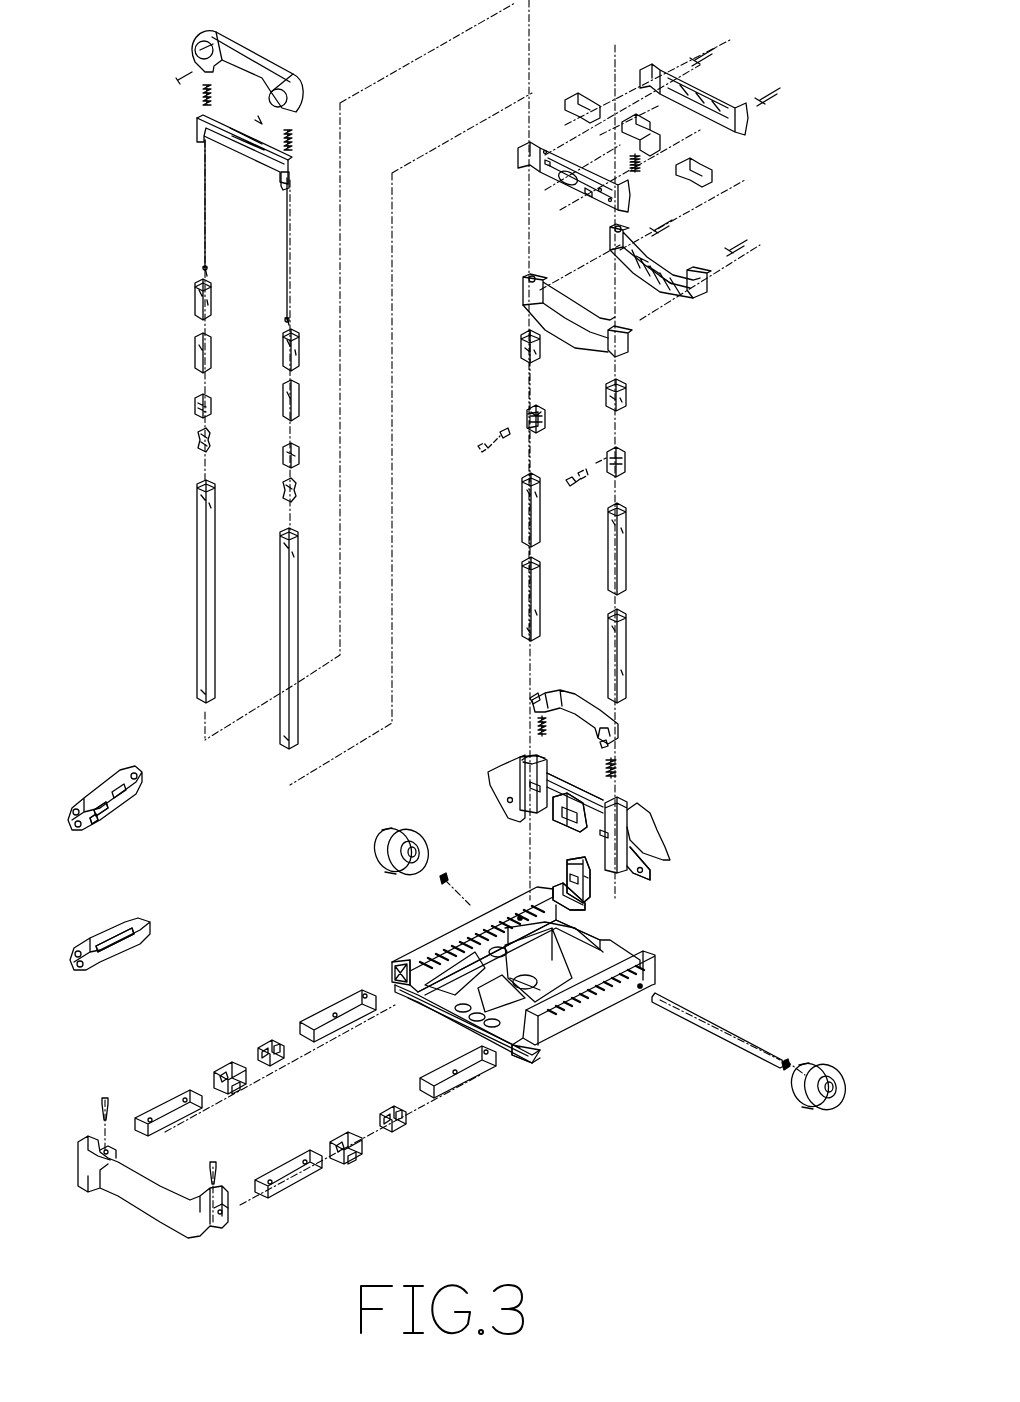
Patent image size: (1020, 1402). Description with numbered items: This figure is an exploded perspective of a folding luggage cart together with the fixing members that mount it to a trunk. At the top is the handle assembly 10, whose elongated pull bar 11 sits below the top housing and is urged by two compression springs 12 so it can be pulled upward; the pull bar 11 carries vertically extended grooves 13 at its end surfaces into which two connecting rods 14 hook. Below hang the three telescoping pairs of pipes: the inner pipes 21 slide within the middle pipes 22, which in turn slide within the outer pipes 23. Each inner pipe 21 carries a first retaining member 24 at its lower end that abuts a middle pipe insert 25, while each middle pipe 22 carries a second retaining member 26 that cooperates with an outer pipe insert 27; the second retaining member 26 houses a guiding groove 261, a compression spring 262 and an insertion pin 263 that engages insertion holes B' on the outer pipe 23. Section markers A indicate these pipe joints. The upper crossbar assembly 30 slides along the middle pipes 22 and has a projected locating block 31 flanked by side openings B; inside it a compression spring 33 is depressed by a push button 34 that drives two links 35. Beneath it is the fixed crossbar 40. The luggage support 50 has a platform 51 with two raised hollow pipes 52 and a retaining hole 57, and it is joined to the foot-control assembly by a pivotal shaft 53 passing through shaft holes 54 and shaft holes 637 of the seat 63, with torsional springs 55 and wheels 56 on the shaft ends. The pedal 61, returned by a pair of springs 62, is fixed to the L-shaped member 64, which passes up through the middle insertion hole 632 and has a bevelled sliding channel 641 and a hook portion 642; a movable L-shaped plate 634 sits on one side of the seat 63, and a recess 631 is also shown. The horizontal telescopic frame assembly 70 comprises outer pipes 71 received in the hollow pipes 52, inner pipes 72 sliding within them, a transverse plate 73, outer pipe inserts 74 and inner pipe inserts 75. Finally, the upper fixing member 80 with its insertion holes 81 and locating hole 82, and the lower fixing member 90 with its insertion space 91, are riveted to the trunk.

The handle assembly 10 is at (165, 103).
The pull bar 11 is at (268, 155).
The compression springs 12 is at (292, 136).
The vertically extended grooves 13 is at (291, 180).
The connecting rods 14 is at (290, 262).
The inner pipes 21 is at (300, 348).
The middle pipes 22 is at (216, 596).
The outer pipes 23 is at (628, 572).
The first retaining member 24 is at (212, 440).
The middle pipe insert 25 is at (193, 410).
The second retaining member 26 is at (545, 416).
The guiding groove 261 is at (530, 418).
The compression spring 262 is at (496, 425).
The insertion pin 263 is at (486, 455).
The outer pipe insert 27 is at (627, 392).
The upper crossbar assembly 30 is at (700, 100).
The projected locating block 31 is at (558, 186).
The compression spring 33 is at (645, 172).
The push button 34 is at (638, 124).
The links 35 is at (712, 178).
The fixed crossbar 40 is at (632, 338).
The luggage support 50 is at (521, 998).
The platform 51 is at (470, 1000).
The hollow pipes 52 is at (418, 950).
The pivotal shaft 53 is at (700, 1022).
The shaft holes 54 is at (522, 918).
The torsional springs 55 is at (444, 873).
The wheels 56 is at (395, 830).
The retaining hole 57 is at (600, 1000).
The pedal 61 is at (572, 700).
The springs 62 is at (620, 770).
The seat 63 is at (560, 790).
The recess 631 is at (530, 757).
The middle insertion hole 632 is at (570, 784).
The movable L-shaped plate 634 is at (562, 828).
The shaft holes 637 is at (648, 878).
The L-shaped member 64 is at (590, 900).
The bevelled sliding channel 641 is at (570, 870).
The hook portion 642 is at (556, 892).
The horizontal telescopic frame assembly 70 is at (362, 948).
The outer pipes 71 is at (340, 1014).
The inner pipes 72 is at (170, 1114).
The transverse plate 73 is at (124, 1200).
The outer pipe insert 74 is at (232, 1092).
The inner pipe insert 75 is at (268, 1040).
The upper fixing member 80 is at (103, 780).
The insertion holes 81 is at (84, 826).
The locating hole 82 is at (110, 808).
The lower fixing member 90 is at (104, 930).
The insertion space 91 is at (106, 930).
The section A is at (196, 350).
The side openings B is at (551, 199).
The insertion holes B' is at (492, 517).